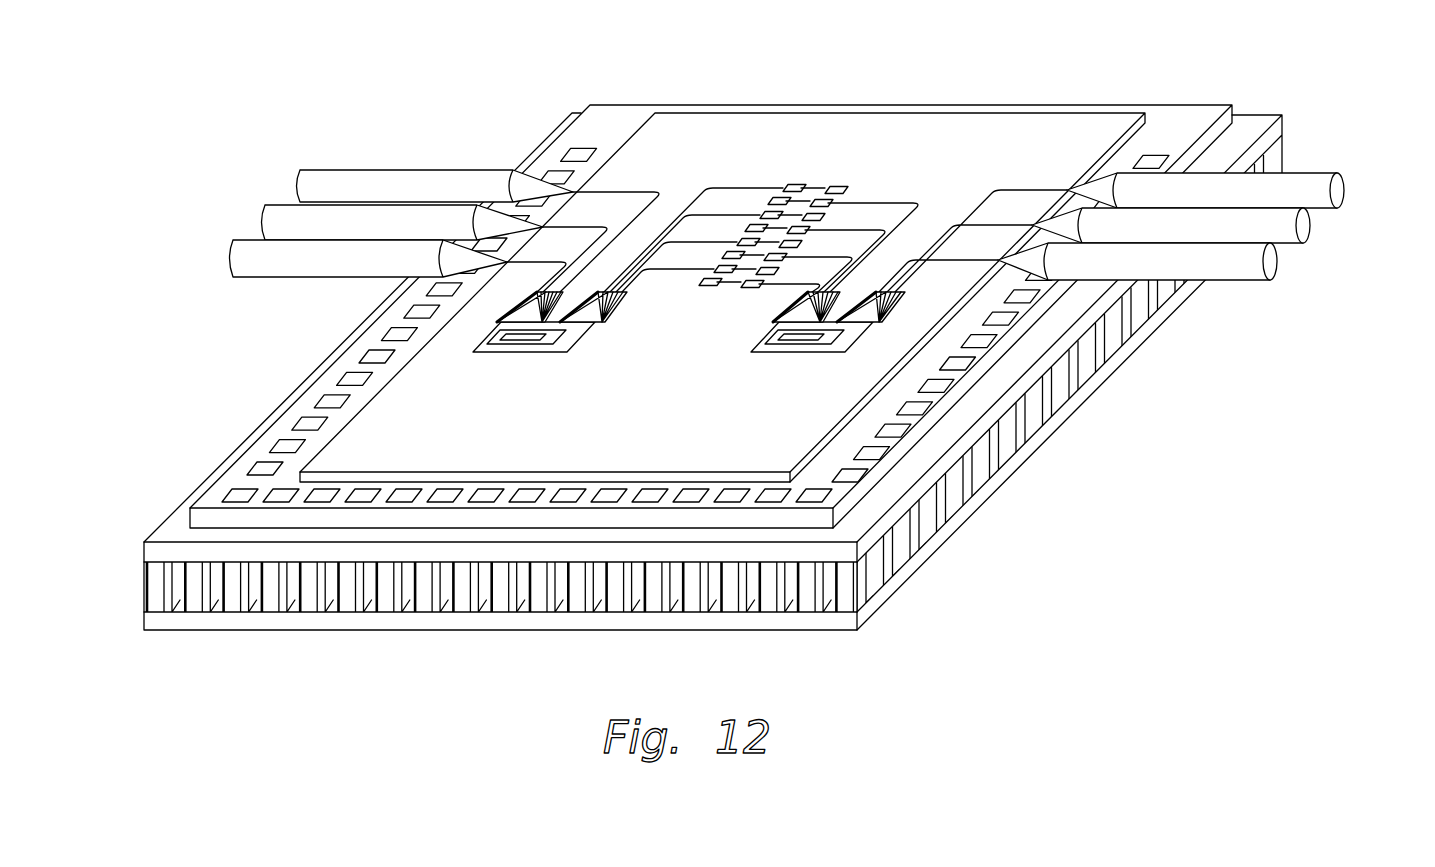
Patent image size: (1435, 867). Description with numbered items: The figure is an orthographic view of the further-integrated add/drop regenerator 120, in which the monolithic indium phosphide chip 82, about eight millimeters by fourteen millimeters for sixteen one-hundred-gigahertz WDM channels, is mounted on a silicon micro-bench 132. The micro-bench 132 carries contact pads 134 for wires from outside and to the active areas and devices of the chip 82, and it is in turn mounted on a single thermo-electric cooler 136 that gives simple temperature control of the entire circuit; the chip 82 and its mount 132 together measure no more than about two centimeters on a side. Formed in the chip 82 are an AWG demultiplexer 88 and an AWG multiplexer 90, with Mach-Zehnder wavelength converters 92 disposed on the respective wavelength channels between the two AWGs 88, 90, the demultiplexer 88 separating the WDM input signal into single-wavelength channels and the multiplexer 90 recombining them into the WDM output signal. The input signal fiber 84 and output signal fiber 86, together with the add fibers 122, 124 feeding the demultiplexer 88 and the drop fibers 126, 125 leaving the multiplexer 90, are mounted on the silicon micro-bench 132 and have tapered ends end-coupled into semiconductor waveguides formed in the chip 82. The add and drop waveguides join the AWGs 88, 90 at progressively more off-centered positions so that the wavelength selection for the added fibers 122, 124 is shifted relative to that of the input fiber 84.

The add/drop regenerator 120 is at (450, 66).
The chip 82 is at (989, 104).
The input signal fiber 84 is at (299, 179).
The output signal fiber 86 is at (1348, 190).
The AWG demultiplexer 88 is at (518, 362).
The AWG multiplexer 90 is at (789, 362).
The Mach-Zehnder wavelength converters 92 is at (860, 172).
The add fiber 122 is at (264, 216).
The add fiber 124 is at (232, 254).
The cable 125 is at (1278, 266).
The drop fiber 126 is at (1312, 233).
The silicon micro-bench 132 is at (1190, 104).
The contact pads 134 is at (900, 406).
The thermo-electric cooler 136 is at (1262, 112).